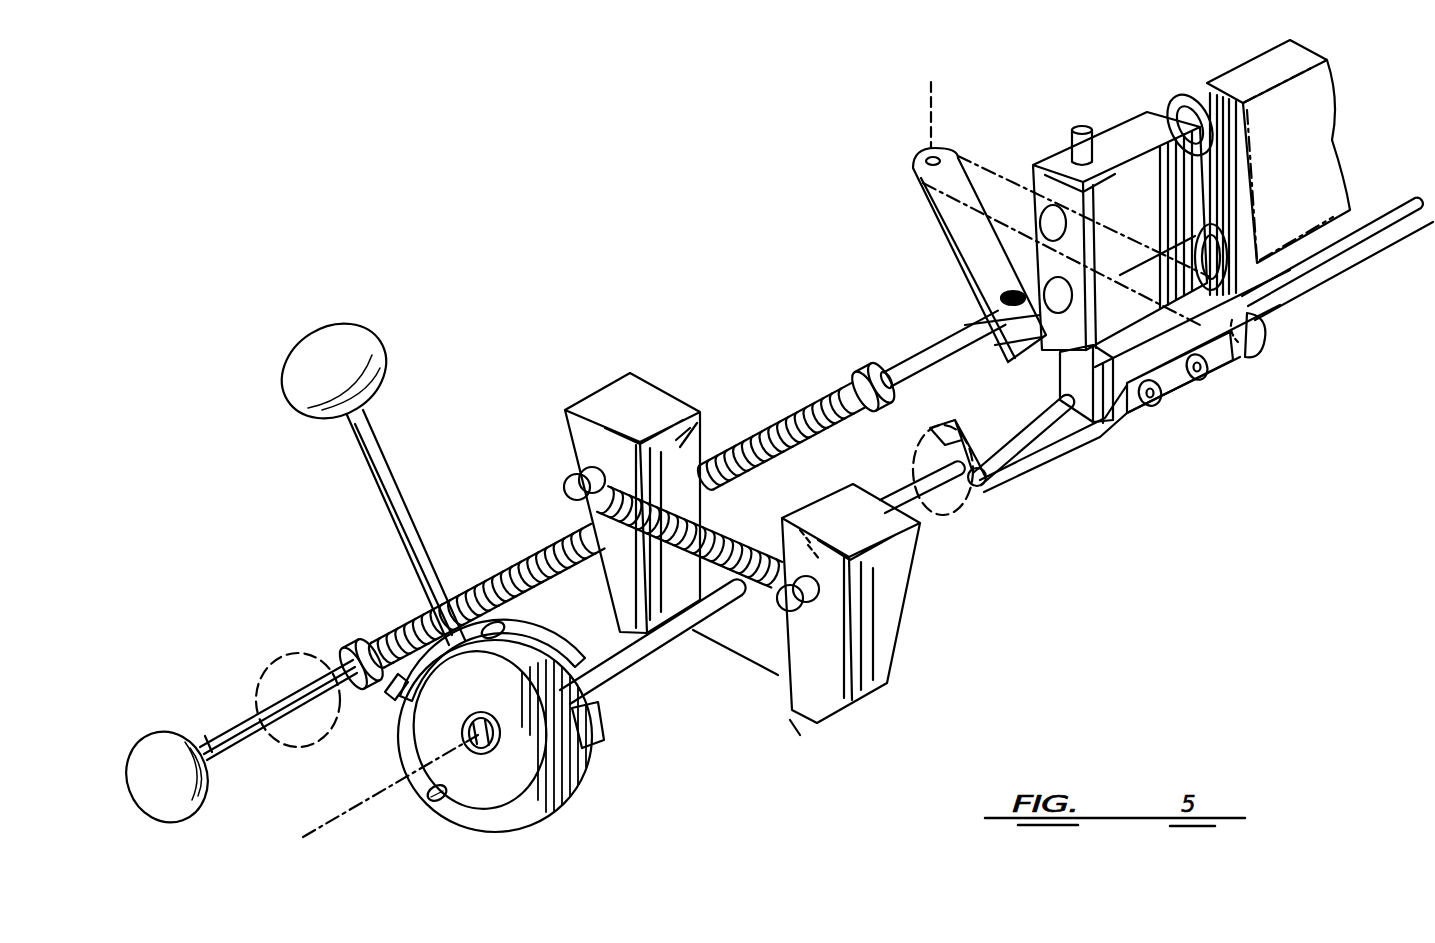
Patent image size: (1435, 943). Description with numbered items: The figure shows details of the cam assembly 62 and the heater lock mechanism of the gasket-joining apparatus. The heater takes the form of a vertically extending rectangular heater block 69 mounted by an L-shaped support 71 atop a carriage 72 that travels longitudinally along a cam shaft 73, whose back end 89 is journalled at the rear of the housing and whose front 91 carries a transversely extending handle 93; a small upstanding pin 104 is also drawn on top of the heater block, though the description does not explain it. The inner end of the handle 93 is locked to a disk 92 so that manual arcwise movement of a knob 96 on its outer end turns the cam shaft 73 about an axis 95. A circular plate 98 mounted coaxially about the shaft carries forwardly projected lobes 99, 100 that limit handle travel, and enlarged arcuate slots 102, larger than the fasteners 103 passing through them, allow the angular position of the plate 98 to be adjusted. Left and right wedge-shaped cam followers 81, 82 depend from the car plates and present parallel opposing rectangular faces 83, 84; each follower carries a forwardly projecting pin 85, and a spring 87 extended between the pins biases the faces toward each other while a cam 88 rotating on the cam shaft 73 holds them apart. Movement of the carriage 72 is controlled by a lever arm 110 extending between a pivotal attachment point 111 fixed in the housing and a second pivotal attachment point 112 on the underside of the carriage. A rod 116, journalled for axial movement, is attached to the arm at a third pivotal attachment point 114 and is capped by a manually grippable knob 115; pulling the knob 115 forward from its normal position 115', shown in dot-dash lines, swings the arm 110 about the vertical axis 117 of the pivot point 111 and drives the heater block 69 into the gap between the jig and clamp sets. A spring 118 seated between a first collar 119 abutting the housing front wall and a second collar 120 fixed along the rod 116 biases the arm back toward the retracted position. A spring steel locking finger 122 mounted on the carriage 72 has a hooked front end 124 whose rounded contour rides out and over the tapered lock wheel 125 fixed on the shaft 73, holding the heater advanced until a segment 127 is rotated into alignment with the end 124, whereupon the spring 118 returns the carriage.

The cam assembly 62 is at (1072, 577).
The heater block 69 is at (1157, 211).
The L-shaped support 71 is at (1235, 176).
The carriage 72 is at (1246, 356).
The cam shaft 73 is at (622, 652).
The left cam follower 81 is at (575, 442).
The right cam follower 82 is at (895, 590).
The rectangular face of left follower 83 is at (683, 440).
The rectangular face of right follower 84 is at (812, 512).
The pin 85 is at (568, 490).
The spring 87 is at (707, 520).
The cam 88 is at (773, 653).
The back end of shaft 89 is at (1412, 203).
The front of shaft 91 is at (487, 753).
The disk 92 is at (530, 780).
The handle 93 is at (370, 477).
The axis 95 is at (367, 797).
The knob 96 is at (312, 412).
The circular plate 98 is at (513, 820).
The lobe 99 is at (393, 694).
The lobe 100 is at (595, 735).
The arcuate slot 102 is at (433, 800).
The fastener 103 is at (440, 802).
The pin 104 is at (1070, 142).
The lever arm 110 is at (945, 255).
The pivotal attachment point 111 is at (918, 163).
The second pivotal attachment point 112 is at (1035, 394).
The third pivotal attachment point 114 is at (1000, 304).
The knob 115 is at (125, 777).
The normal position of knob 115' is at (266, 706).
The rod 116 is at (878, 370).
The vertical axis 117 is at (928, 100).
The spring 118 is at (390, 633).
The first collar 119 is at (335, 643).
The second collar 120 is at (868, 372).
The locking finger 122 is at (1175, 395).
The hooked front end 124 is at (985, 490).
The lock wheel 125 is at (955, 500).
The segment 127 is at (935, 445).